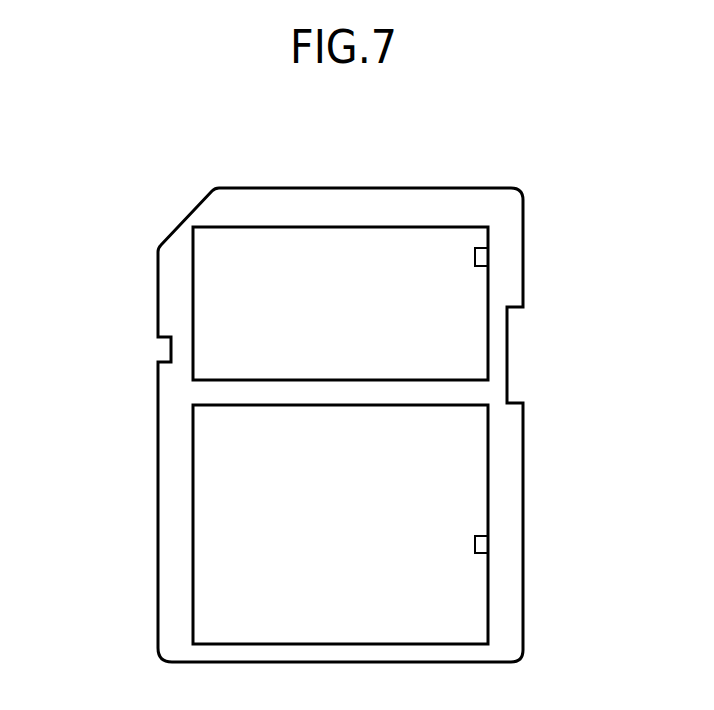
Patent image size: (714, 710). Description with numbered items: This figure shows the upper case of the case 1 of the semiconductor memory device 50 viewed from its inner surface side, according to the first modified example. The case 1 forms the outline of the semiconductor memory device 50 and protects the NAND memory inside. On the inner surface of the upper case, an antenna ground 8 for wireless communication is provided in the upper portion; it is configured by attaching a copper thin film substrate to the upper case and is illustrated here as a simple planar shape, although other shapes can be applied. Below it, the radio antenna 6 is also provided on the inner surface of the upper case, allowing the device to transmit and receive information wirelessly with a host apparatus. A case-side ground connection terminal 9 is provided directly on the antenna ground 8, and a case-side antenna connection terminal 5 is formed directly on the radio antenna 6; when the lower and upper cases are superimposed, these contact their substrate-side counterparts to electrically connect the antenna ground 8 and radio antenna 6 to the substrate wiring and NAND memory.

The semiconductor memory device 50 is at (119, 164).
The case 1 is at (524, 242).
The antenna ground 8 is at (210, 298).
The radio antenna 6 is at (210, 551).
The ground connection terminal 9 is at (482, 257).
The antenna connection terminal 5 is at (482, 543).